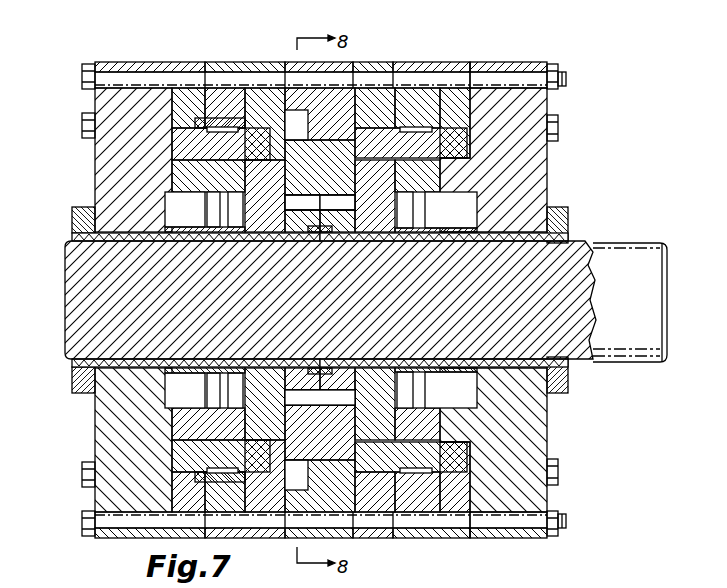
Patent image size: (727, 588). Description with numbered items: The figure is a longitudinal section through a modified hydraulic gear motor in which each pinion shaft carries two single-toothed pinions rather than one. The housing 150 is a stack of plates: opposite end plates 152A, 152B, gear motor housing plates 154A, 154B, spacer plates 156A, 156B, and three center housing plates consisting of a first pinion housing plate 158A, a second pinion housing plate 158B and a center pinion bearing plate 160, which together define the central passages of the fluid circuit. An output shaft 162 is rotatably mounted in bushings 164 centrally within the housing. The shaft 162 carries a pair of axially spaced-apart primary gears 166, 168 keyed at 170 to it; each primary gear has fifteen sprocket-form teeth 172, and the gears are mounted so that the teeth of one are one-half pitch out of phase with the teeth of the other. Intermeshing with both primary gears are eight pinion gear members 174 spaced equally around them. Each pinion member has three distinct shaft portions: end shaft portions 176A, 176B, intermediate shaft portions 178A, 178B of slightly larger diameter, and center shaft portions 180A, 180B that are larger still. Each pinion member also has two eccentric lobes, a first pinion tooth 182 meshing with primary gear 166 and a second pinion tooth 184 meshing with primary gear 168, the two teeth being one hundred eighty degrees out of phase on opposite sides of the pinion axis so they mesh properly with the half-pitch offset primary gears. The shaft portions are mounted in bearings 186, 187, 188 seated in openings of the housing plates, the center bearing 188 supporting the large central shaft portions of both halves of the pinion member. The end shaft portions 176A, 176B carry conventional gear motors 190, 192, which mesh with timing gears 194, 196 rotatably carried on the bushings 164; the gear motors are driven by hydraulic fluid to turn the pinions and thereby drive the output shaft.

The housing 150 is at (84, 447).
The end plate 152A is at (140, 62).
The end plate 152B is at (522, 62).
The gear motor housing plate 154A is at (205, 62).
The gear motor housing plate 154B is at (452, 110).
The spacer plate 156A is at (247, 62).
The spacer plate 156B is at (385, 115).
The first pinion housing plate 158A is at (294, 62).
The second pinion housing plate 158B is at (355, 62).
The center pinion bearing plate 160 is at (343, 62).
The output shaft 162 is at (625, 243).
The bushings 164 is at (560, 245).
The primary gear 166 is at (297, 240).
The primary gear 168 is at (345, 240).
The key 170 is at (318, 234).
The teeth 172 is at (302, 418).
The pinion gear member 174 is at (162, 153).
The end shaft portion 176A is at (175, 140).
The end shaft portion 176B is at (480, 140).
The intermediate shaft portion 178A is at (245, 90).
The intermediate shaft portion 178B is at (380, 118).
The center shaft portion 180A is at (292, 95).
The center shaft portion 180B is at (325, 100).
The first pinion tooth 182 is at (302, 203).
The second pinion tooth 184 is at (375, 196).
The bearing 186 is at (97, 185).
The bearing 187 is at (265, 196).
The center bearing 188 is at (337, 203).
The gear motor 190 is at (197, 118).
The gear motor 192 is at (470, 100).
The timing gear 194 is at (213, 236).
The timing gear 196 is at (427, 240).